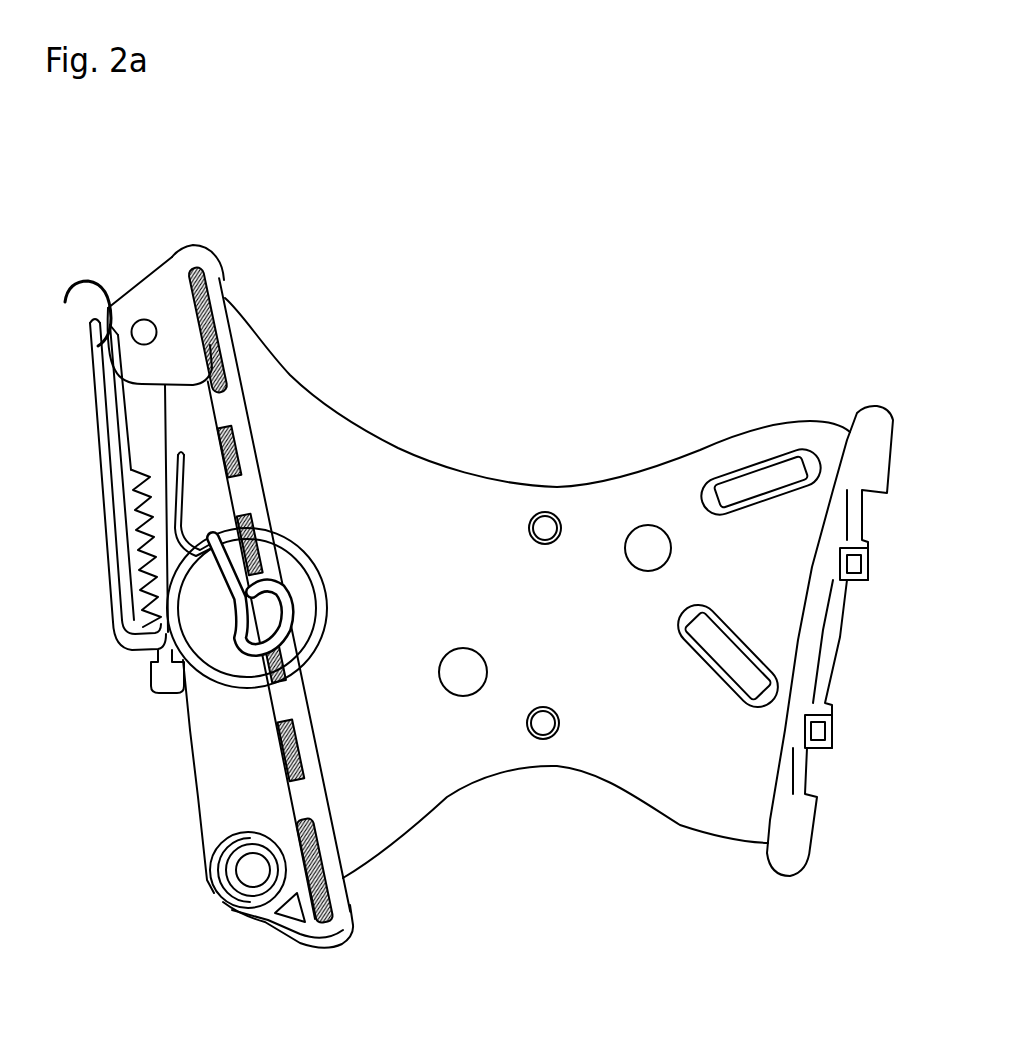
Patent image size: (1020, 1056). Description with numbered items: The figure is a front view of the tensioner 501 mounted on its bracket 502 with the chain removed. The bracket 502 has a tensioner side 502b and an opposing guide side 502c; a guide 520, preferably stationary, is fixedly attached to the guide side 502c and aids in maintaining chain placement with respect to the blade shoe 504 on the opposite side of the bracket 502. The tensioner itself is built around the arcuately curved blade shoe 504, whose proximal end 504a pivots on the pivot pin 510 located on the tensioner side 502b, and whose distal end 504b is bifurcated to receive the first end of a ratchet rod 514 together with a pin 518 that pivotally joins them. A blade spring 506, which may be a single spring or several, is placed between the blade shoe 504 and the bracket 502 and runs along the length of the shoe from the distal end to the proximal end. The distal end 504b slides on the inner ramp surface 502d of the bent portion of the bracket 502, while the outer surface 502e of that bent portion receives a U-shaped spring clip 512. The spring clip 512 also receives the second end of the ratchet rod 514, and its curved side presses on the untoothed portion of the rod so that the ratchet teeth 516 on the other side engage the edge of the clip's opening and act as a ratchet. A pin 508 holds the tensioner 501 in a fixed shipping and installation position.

The tensioner 501 is at (216, 216).
The bracket 502 is at (447, 487).
The tensioner side 502b is at (167, 273).
The guide side 502c is at (817, 433).
The inner ramp surface 502d is at (69, 313).
The outer surface 502e is at (93, 380).
The blade shoe 504 is at (310, 803).
The proximal end 504a is at (330, 935).
The distal end 504b is at (257, 353).
The blade spring 506 is at (210, 335).
The pin 508 is at (287, 547).
The pivot pin 510 is at (248, 875).
The spring clip 512 is at (110, 577).
The ratchet rod 514 is at (152, 678).
The ratchet teeth 516 is at (147, 532).
The pin 518 is at (140, 330).
The guide 520 is at (873, 430).